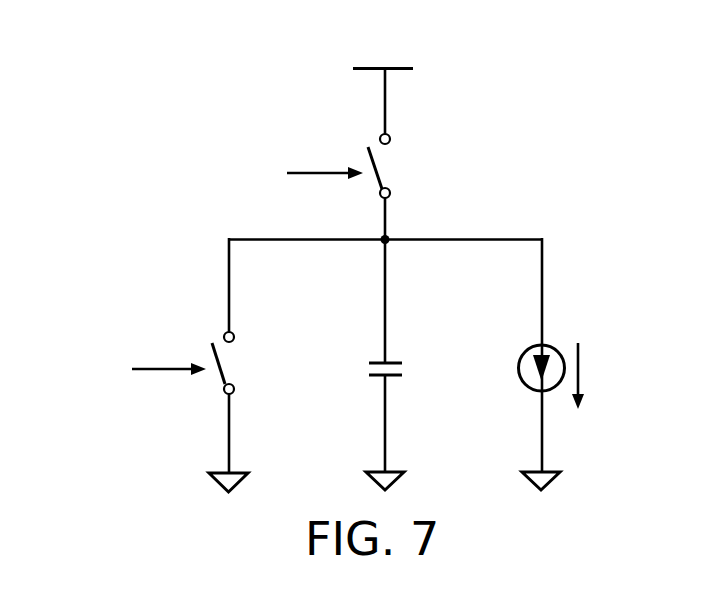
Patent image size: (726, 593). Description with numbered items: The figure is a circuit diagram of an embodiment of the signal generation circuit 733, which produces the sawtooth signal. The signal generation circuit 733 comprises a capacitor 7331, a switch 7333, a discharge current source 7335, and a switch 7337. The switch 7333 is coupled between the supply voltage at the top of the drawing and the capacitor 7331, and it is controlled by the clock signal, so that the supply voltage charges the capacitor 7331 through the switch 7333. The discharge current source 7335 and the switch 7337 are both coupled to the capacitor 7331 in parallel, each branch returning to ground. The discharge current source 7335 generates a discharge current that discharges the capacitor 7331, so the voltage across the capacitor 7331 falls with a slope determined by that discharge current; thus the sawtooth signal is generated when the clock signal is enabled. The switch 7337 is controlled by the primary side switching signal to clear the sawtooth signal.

The signal generation circuit 733 is at (686, 73).
The switch 7333 is at (410, 186).
The switch 7337 is at (258, 402).
The capacitor 7331 is at (417, 414).
The discharge current source 7335 is at (563, 357).